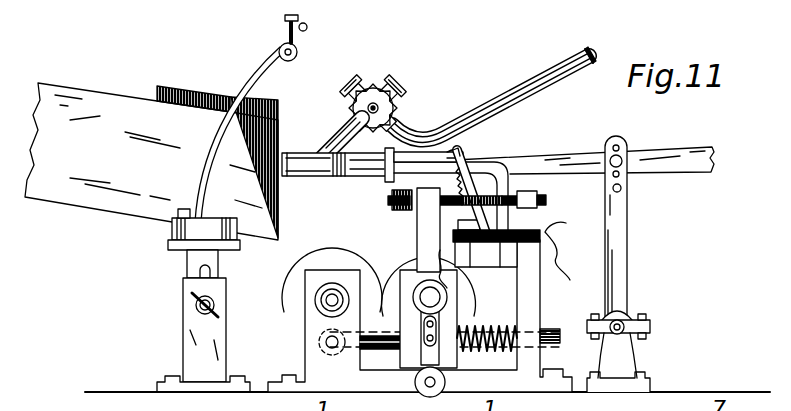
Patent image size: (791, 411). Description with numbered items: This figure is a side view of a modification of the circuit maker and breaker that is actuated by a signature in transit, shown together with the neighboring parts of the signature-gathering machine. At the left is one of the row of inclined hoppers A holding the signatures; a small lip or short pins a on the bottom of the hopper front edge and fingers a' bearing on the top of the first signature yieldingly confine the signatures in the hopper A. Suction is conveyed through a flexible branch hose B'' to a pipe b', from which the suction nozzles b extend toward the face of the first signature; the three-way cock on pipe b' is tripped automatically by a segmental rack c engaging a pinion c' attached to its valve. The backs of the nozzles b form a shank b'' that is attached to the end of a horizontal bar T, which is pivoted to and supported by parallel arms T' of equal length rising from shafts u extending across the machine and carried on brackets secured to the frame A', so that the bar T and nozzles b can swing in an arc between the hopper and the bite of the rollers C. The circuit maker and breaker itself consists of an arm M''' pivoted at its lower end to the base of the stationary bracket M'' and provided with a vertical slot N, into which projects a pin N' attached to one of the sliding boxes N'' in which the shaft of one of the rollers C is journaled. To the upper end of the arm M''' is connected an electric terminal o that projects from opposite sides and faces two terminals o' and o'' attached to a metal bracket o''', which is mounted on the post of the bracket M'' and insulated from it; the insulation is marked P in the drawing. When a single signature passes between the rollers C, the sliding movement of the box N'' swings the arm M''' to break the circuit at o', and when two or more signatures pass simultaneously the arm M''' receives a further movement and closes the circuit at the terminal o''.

The hopper A is at (151, 161).
The lip or short pins a is at (230, 162).
The fingers a' is at (259, 118).
The nozzle b is at (334, 153).
The pipe b' is at (340, 138).
The shank b'' is at (370, 175).
The segmental rack c is at (398, 108).
The pinion c' is at (366, 102).
The branch hose B'' is at (494, 93).
The electric terminal o is at (467, 189).
The terminal o' is at (371, 224).
The terminal o'' is at (469, 192).
The metal bracket o''' is at (468, 140).
The stationary bracket M'' is at (420, 311).
The arm M''' is at (412, 230).
The roller C is at (340, 253).
The pawl P is at (562, 242).
The vertical slot N is at (418, 325).
The pin N' is at (478, 326).
The sliding box N'' is at (459, 323).
The horizontal bar T is at (584, 145).
The parallel arm T' is at (637, 229).
The shaft u is at (625, 318).
The frame A' is at (427, 374).